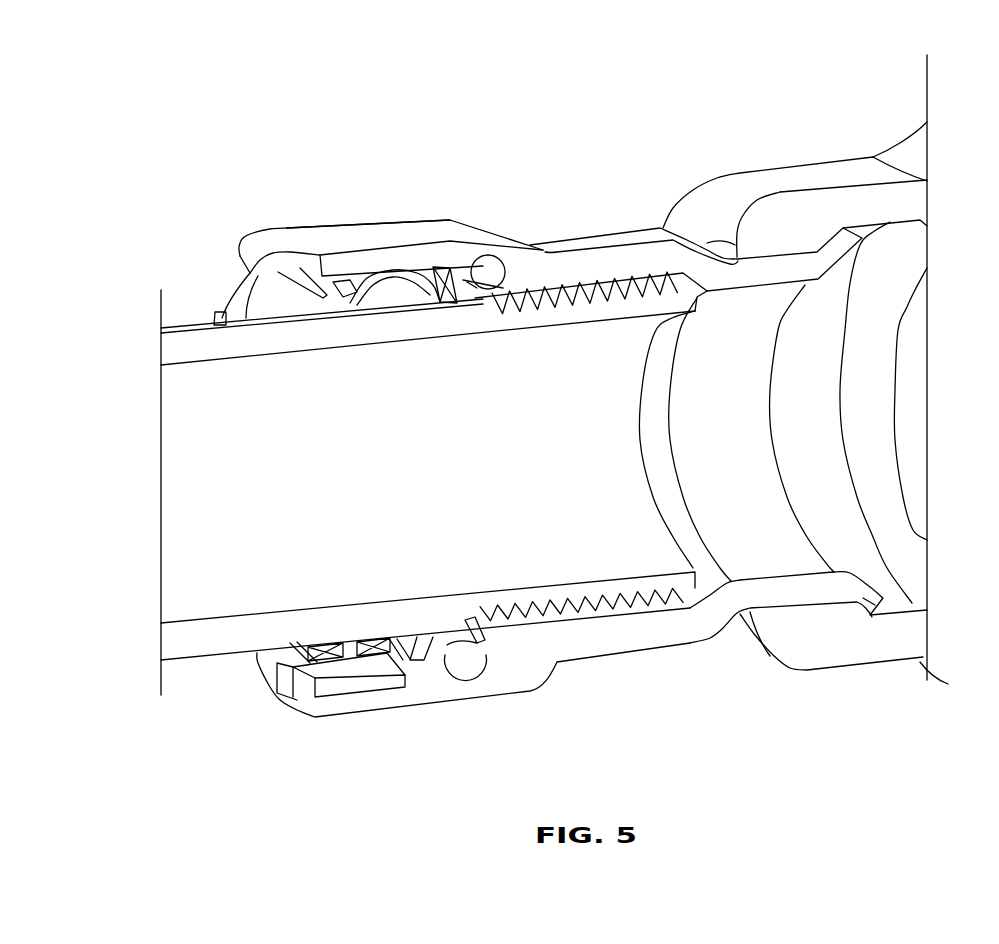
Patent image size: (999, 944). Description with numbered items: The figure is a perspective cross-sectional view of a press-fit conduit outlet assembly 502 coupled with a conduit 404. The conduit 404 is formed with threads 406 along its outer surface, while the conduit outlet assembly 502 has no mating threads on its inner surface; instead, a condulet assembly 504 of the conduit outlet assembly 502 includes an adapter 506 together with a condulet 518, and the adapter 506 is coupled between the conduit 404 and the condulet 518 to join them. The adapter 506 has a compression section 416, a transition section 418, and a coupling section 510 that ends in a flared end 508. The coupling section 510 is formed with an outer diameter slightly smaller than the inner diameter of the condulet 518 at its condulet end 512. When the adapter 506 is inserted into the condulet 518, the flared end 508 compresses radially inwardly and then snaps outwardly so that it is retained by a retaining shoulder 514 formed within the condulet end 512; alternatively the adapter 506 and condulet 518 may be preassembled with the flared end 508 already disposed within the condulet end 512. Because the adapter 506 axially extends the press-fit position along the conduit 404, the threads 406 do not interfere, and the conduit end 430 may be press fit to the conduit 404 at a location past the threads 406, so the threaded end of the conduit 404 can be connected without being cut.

The conduit 404 is at (150, 350).
The threads 406 is at (553, 604).
The compression section 416 is at (333, 230).
The transition section 418 is at (578, 242).
The conduit end 430 is at (613, 585).
The conduit outlet assembly 502 is at (239, 245).
The condulet assembly 504 is at (703, 161).
The adapter 506 is at (408, 230).
The flared end 508 is at (877, 620).
The coupling section 510 is at (773, 595).
The condulet end 512 is at (850, 643).
The retaining shoulder 514 is at (850, 622).
The condulet 518 is at (912, 162).